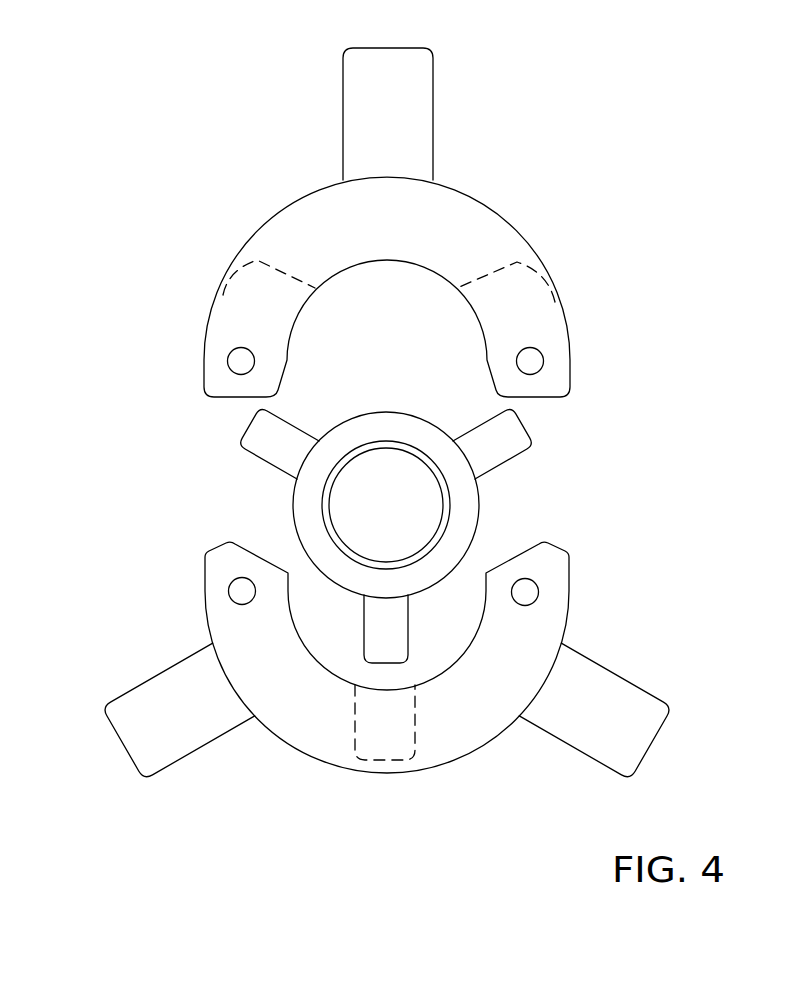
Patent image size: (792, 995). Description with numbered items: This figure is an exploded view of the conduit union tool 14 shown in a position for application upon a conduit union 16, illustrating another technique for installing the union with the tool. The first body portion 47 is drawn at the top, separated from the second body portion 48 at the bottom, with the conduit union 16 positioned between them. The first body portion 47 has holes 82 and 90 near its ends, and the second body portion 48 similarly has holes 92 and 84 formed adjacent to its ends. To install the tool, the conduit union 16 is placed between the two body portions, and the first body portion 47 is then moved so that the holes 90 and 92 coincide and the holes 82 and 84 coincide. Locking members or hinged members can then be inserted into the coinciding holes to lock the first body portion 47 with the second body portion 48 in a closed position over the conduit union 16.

The conduit union tool 14 is at (443, 210).
The first body portion 47 is at (315, 208).
The hole 90 is at (243, 364).
The hole 82 is at (528, 361).
The conduit union 16 is at (482, 513).
The second body portion 48 is at (470, 722).
The hole 92 is at (245, 592).
The hole 84 is at (527, 590).